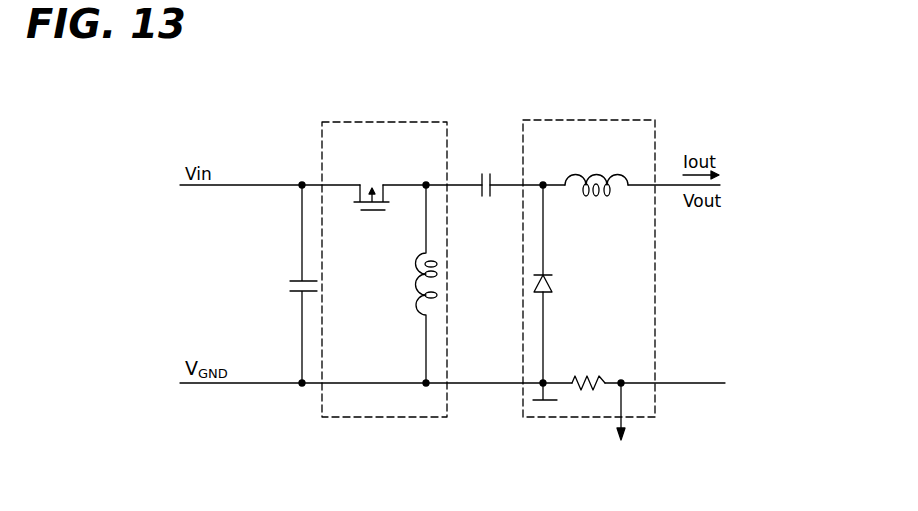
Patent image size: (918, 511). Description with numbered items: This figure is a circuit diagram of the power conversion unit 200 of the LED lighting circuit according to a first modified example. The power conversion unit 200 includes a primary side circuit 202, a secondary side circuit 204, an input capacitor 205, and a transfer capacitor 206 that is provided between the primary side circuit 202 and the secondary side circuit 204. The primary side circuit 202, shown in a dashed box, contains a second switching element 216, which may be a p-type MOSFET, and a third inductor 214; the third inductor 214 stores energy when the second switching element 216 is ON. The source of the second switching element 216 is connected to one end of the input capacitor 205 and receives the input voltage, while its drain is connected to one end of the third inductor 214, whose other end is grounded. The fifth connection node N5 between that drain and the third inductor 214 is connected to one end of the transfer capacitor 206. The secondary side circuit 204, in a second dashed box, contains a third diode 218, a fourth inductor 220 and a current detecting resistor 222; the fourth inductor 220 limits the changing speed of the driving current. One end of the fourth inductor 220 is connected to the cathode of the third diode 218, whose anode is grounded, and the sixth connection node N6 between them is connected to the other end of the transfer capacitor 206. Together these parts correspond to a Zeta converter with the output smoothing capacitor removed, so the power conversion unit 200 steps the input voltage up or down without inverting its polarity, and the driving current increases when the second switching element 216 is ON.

The power conversion unit 200 is at (472, 478).
The primary side circuit 202 is at (384, 121).
The secondary side circuit 204 is at (581, 120).
The input capacitor 205 is at (290, 285).
The transfer capacitor 206 is at (485, 173).
The third inductor 214 is at (412, 289).
The second switching element 216 is at (371, 181).
The third diode 218 is at (556, 283).
The fourth inductor 220 is at (602, 173).
The current detecting resistor 222 is at (592, 377).
The fifth connection node N5 is at (427, 182).
The sixth connection node N6 is at (544, 181).